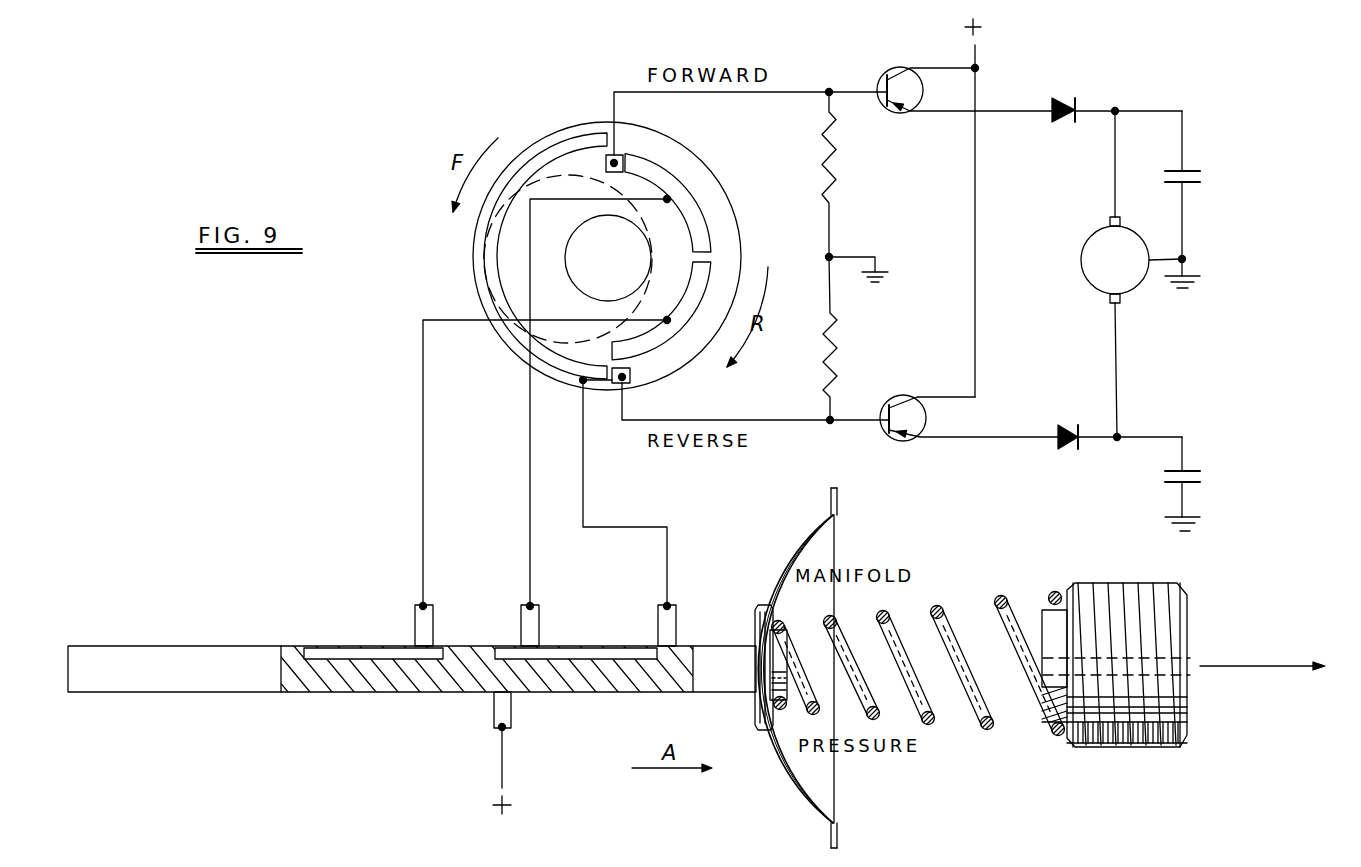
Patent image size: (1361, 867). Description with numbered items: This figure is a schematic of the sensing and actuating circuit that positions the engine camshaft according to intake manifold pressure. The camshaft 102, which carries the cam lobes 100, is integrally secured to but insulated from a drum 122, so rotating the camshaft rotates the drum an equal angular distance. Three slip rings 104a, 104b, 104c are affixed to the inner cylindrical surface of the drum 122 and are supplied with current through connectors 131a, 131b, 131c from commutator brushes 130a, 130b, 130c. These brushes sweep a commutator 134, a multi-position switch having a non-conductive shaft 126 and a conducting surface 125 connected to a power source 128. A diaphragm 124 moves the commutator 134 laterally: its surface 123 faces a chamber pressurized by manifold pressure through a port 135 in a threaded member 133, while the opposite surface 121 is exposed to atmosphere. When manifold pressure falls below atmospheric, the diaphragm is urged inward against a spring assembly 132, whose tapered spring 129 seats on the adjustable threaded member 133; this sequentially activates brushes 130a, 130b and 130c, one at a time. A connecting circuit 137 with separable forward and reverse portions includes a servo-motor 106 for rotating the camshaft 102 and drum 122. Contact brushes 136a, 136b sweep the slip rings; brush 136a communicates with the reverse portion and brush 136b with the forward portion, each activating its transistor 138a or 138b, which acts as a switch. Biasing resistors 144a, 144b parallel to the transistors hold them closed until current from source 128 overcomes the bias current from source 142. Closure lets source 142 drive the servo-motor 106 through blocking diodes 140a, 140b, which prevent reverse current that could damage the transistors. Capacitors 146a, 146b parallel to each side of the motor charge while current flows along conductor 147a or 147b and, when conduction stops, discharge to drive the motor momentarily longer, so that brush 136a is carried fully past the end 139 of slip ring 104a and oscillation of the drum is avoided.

The camshaft lobe 100 is at (575, 172).
The camshaft 102 is at (588, 273).
The slip ring 104a is at (545, 147).
The slip ring 104b is at (700, 205).
The slip ring 104c is at (702, 280).
The servo-motor 106 is at (1138, 276).
The opposite surface of diaphragm 121 is at (780, 573).
The drum 122 is at (702, 366).
The diaphragm surface 123 is at (790, 556).
The diaphragm 124 is at (813, 522).
The conducting surface 125 is at (607, 682).
The non-conductive shaft 126 is at (358, 630).
The power source 128 is at (512, 712).
The spring 129 is at (997, 597).
The commutator brush 130a is at (676, 625).
The commutator brush 130b is at (539, 623).
The commutator brush 130c is at (433, 618).
The connector 131a is at (583, 505).
The connector 131b is at (530, 560).
The connector 131c is at (423, 510).
The spring assembly 132 is at (991, 748).
The threaded member 133 is at (1163, 572).
The commutator 134 is at (673, 700).
The port 135 is at (1182, 663).
The contact brush 136a is at (630, 380).
The contact brush 136b is at (623, 157).
The connecting circuit 137 is at (1138, 102).
The transistor 138a is at (910, 387).
The transistor 138b is at (908, 113).
The end of slip ring 139 is at (615, 383).
The blocking diode 140a is at (1082, 431).
The blocking diode 140b is at (1077, 109).
The power source 142 is at (976, 67).
The biasing resistor 144a is at (833, 340).
The biasing resistor 144b is at (833, 172).
The capacitor 146a is at (1205, 477).
The capacitor 146b is at (1200, 177).
The conductor 147a is at (1085, 441).
The conductor 147b is at (1065, 83).